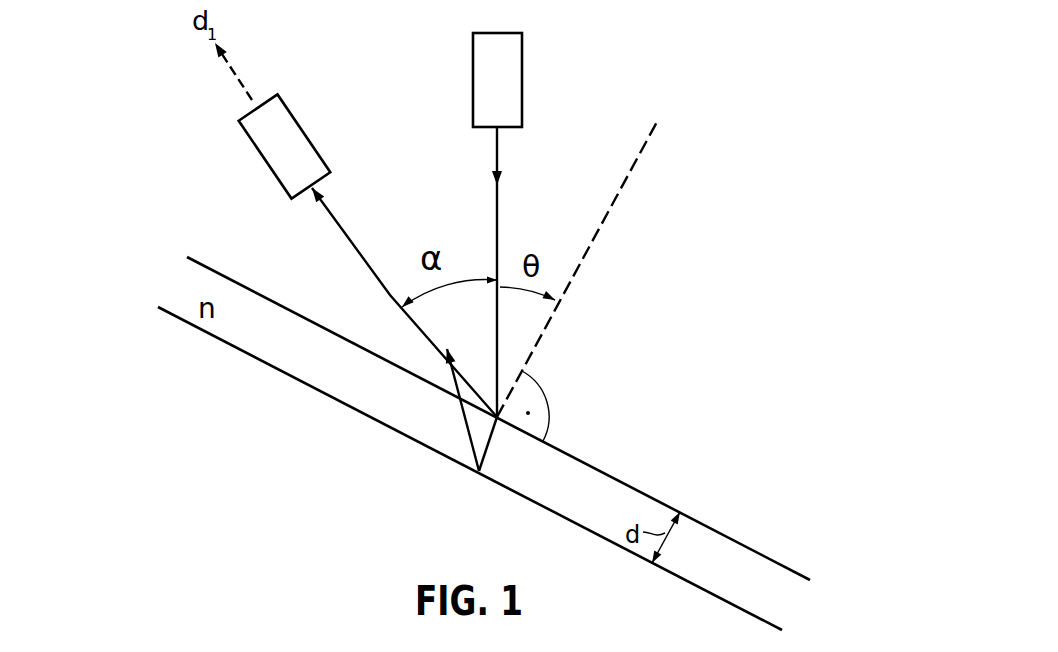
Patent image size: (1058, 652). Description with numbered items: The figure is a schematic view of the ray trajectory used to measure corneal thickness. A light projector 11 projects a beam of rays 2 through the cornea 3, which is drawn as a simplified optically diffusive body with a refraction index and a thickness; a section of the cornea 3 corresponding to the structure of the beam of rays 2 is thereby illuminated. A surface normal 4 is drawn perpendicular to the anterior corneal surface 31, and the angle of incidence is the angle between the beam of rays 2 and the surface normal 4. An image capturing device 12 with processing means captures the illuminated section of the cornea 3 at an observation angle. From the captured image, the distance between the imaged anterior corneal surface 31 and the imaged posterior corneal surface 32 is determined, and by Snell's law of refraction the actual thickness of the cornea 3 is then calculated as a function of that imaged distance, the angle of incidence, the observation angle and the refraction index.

The light projector 11 is at (500, 70).
The image capturing device 12 is at (280, 145).
The beam of rays 2 is at (498, 213).
The cornea 3 is at (463, 443).
The anterior corneal surface 31 is at (630, 487).
The posterior corneal surface 32 is at (240, 355).
The surface normal 4 is at (625, 185).